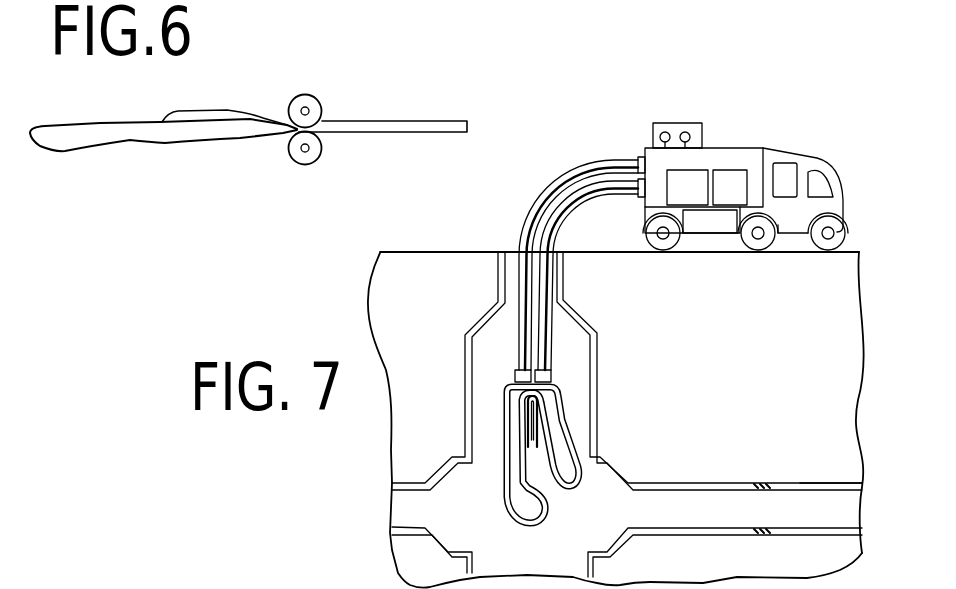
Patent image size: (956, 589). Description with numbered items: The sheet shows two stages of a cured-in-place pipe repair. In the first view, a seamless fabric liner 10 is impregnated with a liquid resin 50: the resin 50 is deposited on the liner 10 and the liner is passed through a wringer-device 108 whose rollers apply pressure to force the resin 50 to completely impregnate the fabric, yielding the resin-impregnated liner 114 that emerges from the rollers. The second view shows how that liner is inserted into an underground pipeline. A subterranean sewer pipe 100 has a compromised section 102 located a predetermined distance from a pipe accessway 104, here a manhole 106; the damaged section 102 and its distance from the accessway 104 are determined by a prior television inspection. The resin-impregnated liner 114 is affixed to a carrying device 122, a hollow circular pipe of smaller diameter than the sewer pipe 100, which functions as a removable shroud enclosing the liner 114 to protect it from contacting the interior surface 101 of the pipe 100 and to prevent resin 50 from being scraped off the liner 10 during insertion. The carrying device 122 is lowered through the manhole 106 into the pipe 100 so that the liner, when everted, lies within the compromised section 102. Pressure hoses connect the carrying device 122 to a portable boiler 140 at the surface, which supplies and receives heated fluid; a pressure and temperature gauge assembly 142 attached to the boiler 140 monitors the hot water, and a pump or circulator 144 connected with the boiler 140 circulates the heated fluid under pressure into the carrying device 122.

In FIG. 6, the seamless fabric liner 10 is at (103, 123).
In FIG. 6, the liquid resin 50 is at (241, 111).
In FIG. 6, the wringer-device 108 is at (315, 99).
In FIG. 6, the resin-impregnated liner 114 is at (412, 121).
In FIG. 7, the sewer pipe 100 is at (814, 483).
In FIG. 7, the interior surface 101 is at (705, 530).
In FIG. 7, the compromised section 102 is at (765, 485).
In FIG. 7, the pipe accessway 104 is at (495, 523).
In FIG. 7, the manhole 106 is at (493, 353).
In FIG. 7, the carrying device 122 is at (562, 432).
In FIG. 7, the portable boiler 140 is at (677, 187).
In FIG. 7, the pressure and temperature gauge assembly 142 is at (653, 142).
In FIG. 7, the circulator 144 is at (737, 177).